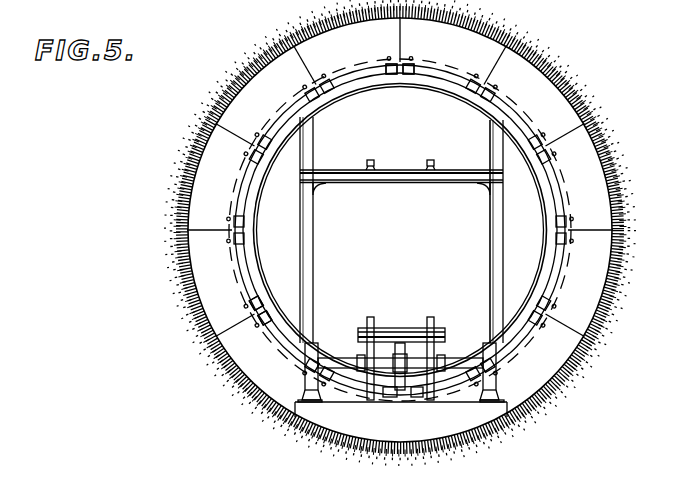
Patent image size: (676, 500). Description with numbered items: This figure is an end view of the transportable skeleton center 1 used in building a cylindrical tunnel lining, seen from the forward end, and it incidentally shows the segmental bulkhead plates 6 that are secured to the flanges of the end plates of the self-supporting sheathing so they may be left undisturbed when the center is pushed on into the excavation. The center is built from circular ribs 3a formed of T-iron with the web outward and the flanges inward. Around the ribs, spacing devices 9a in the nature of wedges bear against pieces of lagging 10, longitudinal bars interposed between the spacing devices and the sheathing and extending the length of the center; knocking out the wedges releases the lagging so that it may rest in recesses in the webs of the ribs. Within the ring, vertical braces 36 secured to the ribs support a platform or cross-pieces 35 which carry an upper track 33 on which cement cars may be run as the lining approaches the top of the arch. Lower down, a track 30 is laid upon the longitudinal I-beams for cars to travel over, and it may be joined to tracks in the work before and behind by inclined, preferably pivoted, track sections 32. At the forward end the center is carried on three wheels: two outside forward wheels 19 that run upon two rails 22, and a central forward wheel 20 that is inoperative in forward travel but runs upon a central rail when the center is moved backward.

The transportable skeleton center 1 is at (400, 232).
The segmental bulkhead plates 6 is at (400, 209).
The lagging 10 is at (395, 75).
The spacing devices 9a is at (411, 75).
The ribs 3a is at (262, 273).
The vertical braces 36 is at (313, 284).
The cross-pieces 35 is at (407, 183).
The upper track 33 is at (426, 163).
The track 30 is at (428, 328).
The track sections 32 is at (447, 359).
The wheels 19 is at (306, 375).
The central forward wheel 20 is at (400, 403).
The rails 22 is at (313, 403).